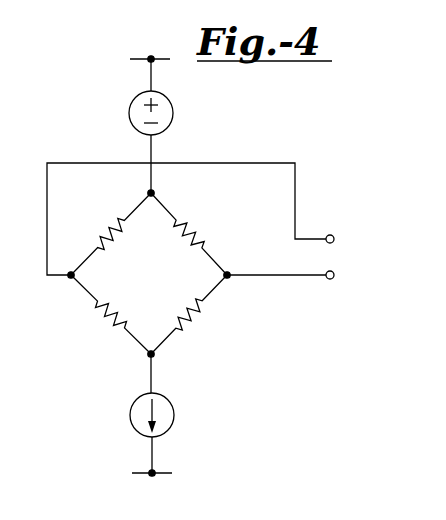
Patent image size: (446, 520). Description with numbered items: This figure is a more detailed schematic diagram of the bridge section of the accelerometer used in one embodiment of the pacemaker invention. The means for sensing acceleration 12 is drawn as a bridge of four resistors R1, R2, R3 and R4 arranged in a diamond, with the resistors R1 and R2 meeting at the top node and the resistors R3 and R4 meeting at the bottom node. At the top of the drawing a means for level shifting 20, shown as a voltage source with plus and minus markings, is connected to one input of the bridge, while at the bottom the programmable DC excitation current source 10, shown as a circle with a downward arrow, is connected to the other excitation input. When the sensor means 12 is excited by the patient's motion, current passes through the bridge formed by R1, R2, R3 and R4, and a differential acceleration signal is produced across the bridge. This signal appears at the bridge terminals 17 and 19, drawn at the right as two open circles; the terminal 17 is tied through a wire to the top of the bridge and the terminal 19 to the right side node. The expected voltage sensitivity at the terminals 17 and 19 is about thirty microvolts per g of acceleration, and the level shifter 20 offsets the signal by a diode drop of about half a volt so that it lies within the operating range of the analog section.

The programmable DC excitation current source 10 is at (130, 415).
The means for sensing acceleration 12 is at (168, 263).
The bridge terminal 17 is at (311, 239).
The bridge terminal 19 is at (296, 277).
The means for level shifting 20 is at (129, 115).
The resistor R1 is at (111, 234).
The resistor R2 is at (189, 234).
The resistor R3 is at (189, 314).
The resistor R4 is at (111, 314).